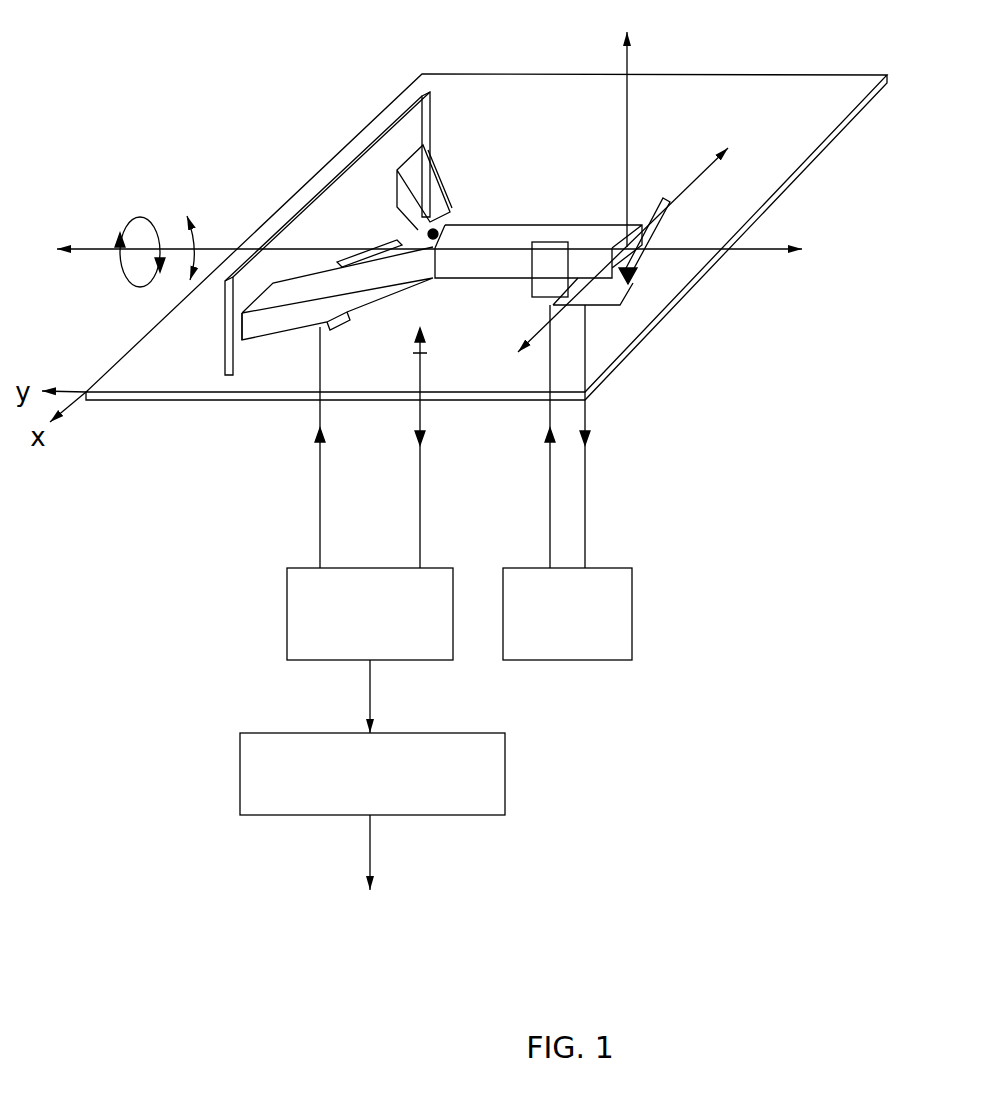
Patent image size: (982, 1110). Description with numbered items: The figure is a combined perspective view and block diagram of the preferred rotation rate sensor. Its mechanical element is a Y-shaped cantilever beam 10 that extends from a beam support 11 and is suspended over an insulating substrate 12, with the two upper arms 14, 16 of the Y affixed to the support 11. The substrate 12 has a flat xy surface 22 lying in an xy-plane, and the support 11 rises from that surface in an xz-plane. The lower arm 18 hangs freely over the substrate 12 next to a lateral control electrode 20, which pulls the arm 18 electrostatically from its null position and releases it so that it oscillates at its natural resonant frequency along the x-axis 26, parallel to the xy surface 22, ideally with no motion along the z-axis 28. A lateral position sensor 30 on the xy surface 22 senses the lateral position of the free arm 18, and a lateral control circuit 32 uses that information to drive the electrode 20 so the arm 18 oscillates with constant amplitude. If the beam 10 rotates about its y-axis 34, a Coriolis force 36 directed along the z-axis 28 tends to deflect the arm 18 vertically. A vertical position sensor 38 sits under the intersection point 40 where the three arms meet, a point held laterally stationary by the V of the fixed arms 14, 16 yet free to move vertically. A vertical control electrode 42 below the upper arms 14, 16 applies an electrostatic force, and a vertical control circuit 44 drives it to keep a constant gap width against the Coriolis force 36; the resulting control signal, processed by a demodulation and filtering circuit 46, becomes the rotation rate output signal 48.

The Y-shaped cantilever beam 10 is at (505, 188).
The beam support 11 is at (243, 360).
The insulating substrate 12 is at (138, 408).
The upper arm of the Y 14 is at (417, 173).
The upper arm of the Y 16 is at (300, 285).
The lower arm 18 is at (578, 232).
The lateral control electrode 20 is at (548, 280).
The xy surface 22 is at (198, 365).
The x-axis 26 is at (698, 178).
The z-axis 28 is at (628, 62).
The lateral position sensor 30 is at (625, 300).
The lateral control circuit 32 is at (633, 600).
The y-axis 34 is at (93, 250).
The Coriolis force 36 is at (195, 223).
The vertical position sensor 38 is at (425, 340).
The intersection point 40 is at (433, 234).
The vertical control electrode 42 is at (452, 205).
The vertical control circuit 44 is at (285, 603).
The demodulation and filtering circuit 46 is at (238, 777).
The rotation rate output signal 48 is at (370, 858).